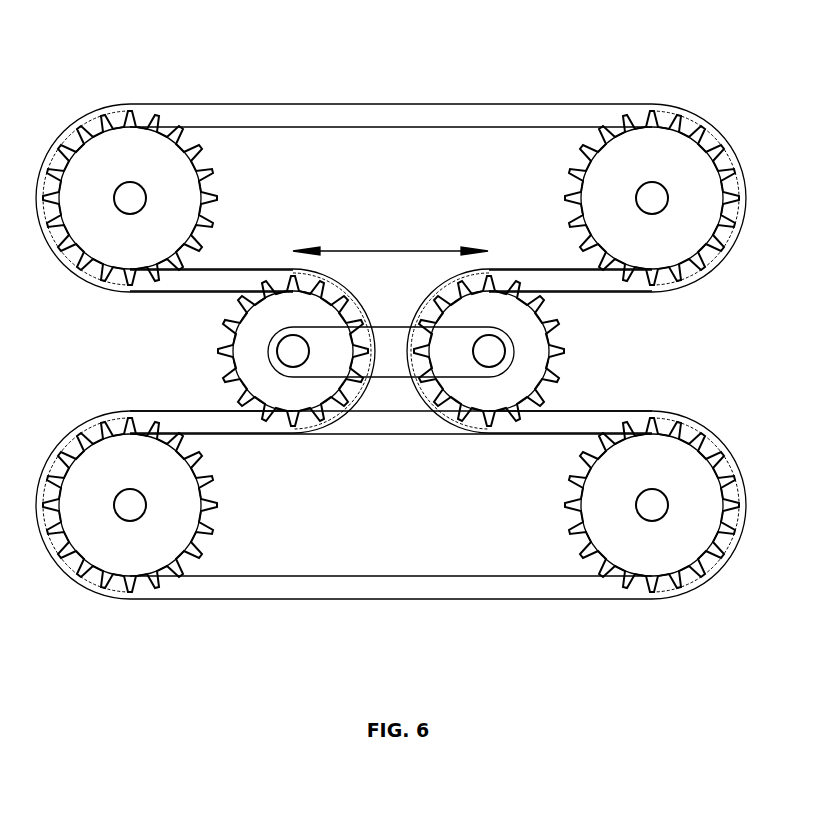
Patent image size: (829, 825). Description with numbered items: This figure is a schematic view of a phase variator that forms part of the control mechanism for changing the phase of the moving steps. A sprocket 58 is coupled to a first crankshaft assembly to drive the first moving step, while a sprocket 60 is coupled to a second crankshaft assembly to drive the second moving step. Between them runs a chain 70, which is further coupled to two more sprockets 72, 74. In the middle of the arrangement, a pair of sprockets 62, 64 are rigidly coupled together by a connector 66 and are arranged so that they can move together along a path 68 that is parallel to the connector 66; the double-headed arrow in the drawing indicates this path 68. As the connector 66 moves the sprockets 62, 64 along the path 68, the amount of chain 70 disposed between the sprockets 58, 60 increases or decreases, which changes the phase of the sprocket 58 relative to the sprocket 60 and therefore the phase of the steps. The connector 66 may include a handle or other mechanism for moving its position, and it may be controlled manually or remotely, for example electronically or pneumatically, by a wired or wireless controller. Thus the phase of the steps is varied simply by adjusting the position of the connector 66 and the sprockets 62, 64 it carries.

The sprocket 58 is at (648, 152).
The sprocket 60 is at (663, 540).
The sprocket 62 is at (258, 370).
The sprocket 64 is at (507, 387).
The connector 66 is at (392, 353).
The path 68 is at (383, 245).
The chain 70 is at (274, 122).
The sprocket 72 is at (133, 153).
The sprocket 74 is at (112, 542).